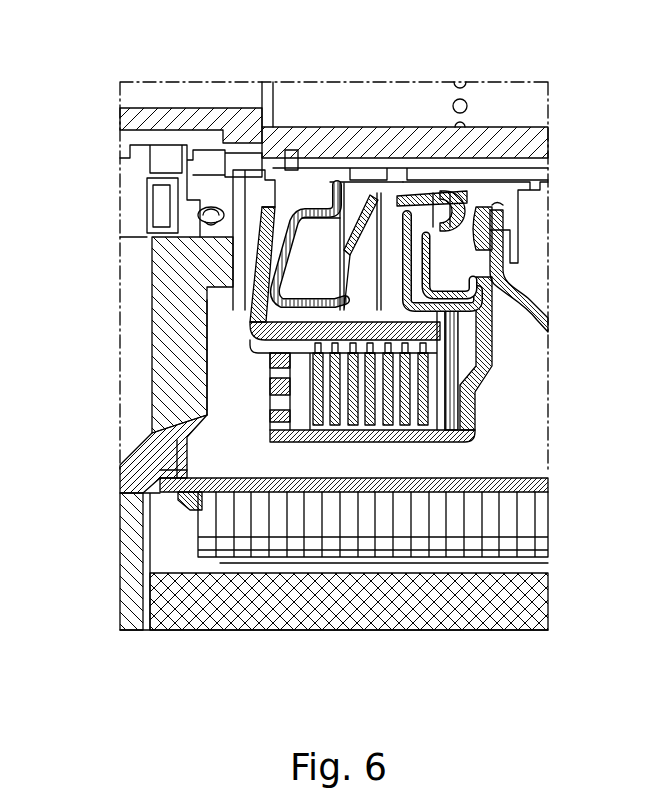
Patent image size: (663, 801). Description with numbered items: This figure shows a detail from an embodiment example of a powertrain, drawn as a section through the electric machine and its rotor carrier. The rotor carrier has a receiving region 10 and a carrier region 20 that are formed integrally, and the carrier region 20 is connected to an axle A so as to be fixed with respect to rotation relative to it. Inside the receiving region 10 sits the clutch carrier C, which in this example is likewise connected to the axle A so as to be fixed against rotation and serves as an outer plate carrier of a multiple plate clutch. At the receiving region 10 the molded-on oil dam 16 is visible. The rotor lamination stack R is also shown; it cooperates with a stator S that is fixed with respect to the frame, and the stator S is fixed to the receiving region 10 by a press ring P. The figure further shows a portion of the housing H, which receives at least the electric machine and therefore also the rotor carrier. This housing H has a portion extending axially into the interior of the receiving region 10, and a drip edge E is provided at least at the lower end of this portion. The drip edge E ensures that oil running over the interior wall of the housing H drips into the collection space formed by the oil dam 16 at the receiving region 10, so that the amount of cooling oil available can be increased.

The axle A is at (408, 122).
The housing H is at (185, 297).
The drip edge E is at (205, 405).
The oil dam 16 is at (145, 487).
The carrier region 20 is at (530, 283).
The clutch carrier C is at (493, 376).
The receiving region 10 is at (518, 485).
The rotor lamination stack R is at (490, 517).
The press ring P is at (188, 508).
The stator S is at (432, 605).